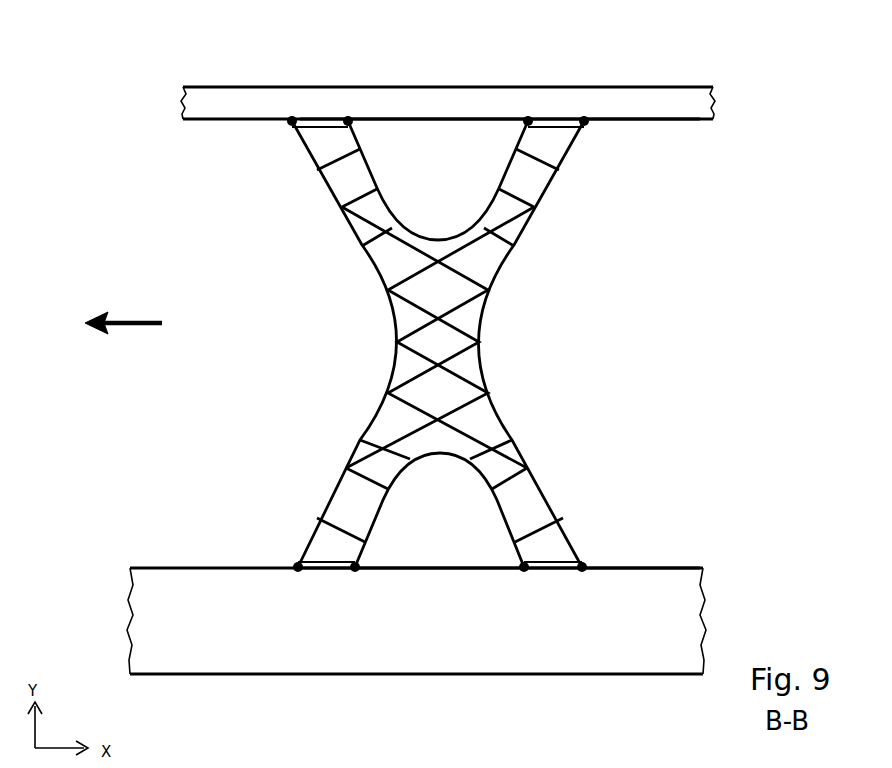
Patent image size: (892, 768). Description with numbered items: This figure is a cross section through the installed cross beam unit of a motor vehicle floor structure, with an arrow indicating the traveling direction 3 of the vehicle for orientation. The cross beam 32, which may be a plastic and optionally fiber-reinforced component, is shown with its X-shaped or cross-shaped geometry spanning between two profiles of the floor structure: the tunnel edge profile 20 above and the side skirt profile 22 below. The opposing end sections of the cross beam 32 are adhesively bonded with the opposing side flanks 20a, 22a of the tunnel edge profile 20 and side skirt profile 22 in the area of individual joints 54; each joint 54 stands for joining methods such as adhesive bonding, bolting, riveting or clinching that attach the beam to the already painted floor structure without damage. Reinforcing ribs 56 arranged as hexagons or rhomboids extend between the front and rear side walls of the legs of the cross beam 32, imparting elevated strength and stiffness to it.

The tunnel edge profile 20 is at (598, 105).
The side flank of tunnel edge profile 20a is at (652, 122).
The side skirt profile 22 is at (645, 583).
The side flank of side skirt profile 22a is at (689, 570).
The cross beam 32 is at (478, 345).
The joint 54 is at (292, 121).
The reinforcing ribs 56 is at (461, 435).
The traveling direction 3 is at (145, 326).